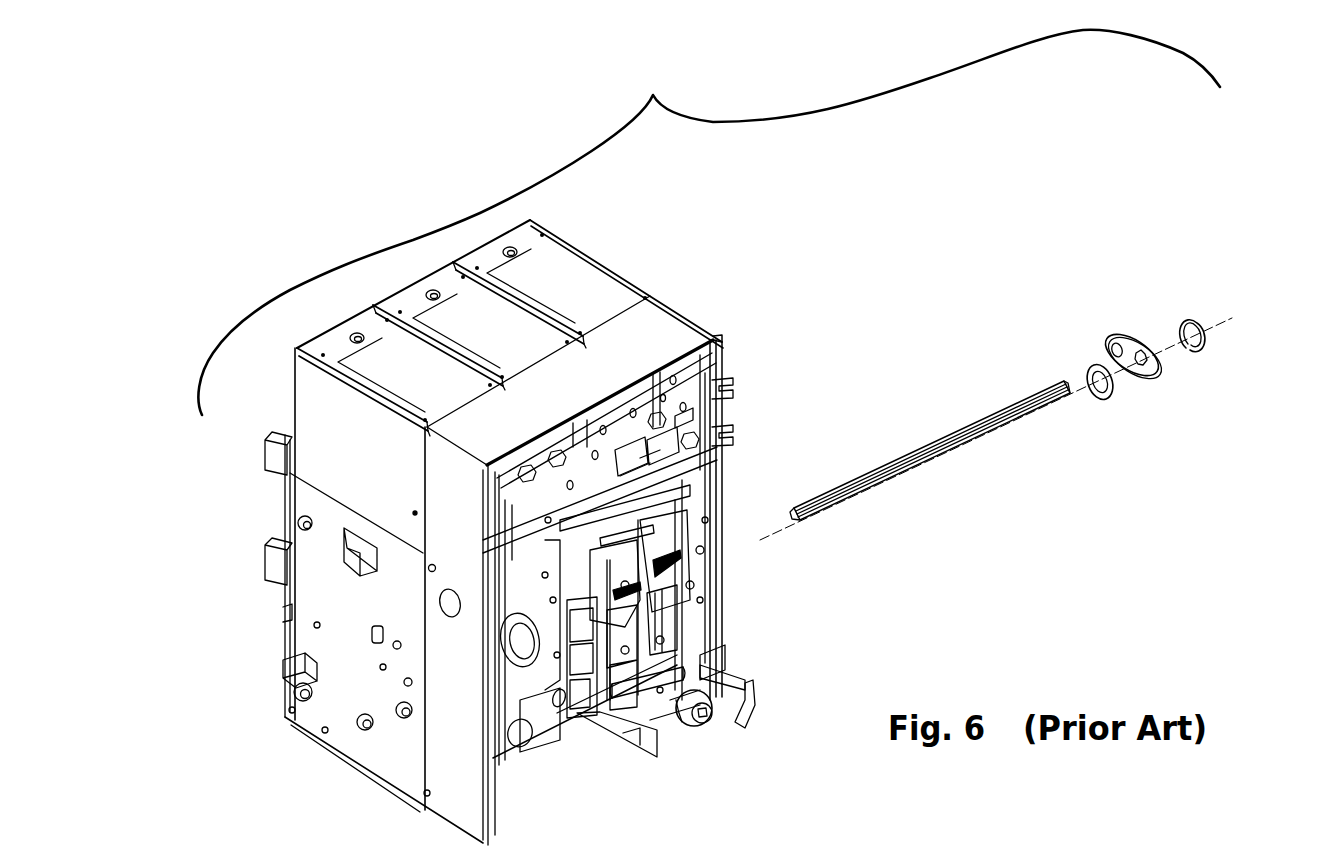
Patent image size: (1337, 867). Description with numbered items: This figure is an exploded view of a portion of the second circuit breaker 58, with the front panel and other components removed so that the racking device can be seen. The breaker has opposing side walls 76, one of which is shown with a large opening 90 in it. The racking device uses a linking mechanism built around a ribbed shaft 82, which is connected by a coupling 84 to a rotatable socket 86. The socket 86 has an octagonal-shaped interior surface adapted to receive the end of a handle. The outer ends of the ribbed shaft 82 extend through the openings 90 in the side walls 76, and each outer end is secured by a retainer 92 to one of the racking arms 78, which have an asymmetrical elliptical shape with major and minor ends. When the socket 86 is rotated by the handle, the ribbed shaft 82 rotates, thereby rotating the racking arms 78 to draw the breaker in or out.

The second circuit breaker 58 is at (709, 222).
The side walls 76 is at (322, 603).
The racking arms 78 is at (1148, 370).
The ribbed shaft 82 is at (888, 462).
The coupling 84 is at (697, 670).
The rotatable socket 86 is at (688, 718).
The openings 90 is at (358, 724).
The retainers 92 is at (1193, 322).